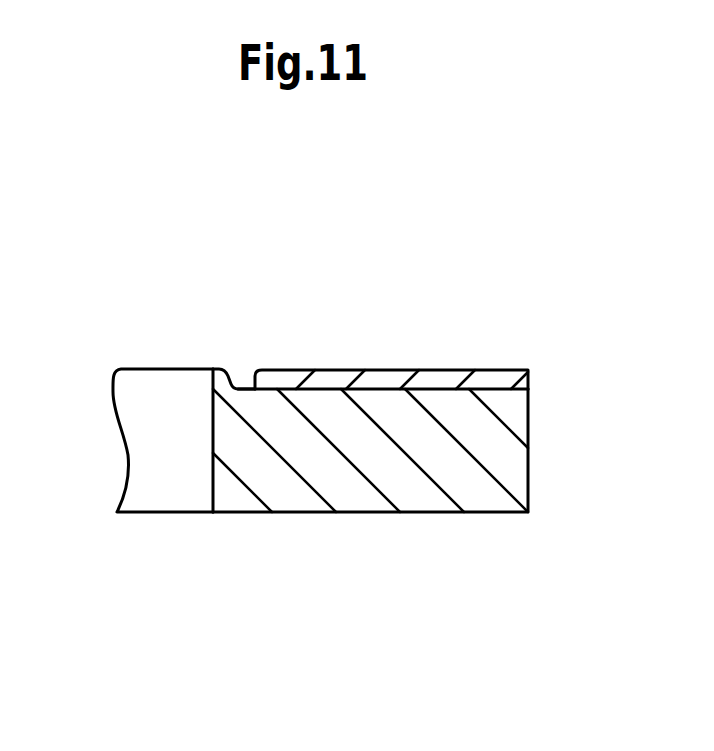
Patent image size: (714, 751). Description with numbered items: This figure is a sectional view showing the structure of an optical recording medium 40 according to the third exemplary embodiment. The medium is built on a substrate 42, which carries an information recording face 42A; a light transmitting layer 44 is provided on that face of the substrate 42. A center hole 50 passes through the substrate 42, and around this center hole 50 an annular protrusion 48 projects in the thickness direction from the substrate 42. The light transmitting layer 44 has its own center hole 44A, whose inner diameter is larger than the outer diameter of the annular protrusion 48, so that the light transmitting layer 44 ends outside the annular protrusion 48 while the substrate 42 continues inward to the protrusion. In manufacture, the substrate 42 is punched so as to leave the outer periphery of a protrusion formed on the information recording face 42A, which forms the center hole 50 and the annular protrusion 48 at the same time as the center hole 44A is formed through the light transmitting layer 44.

The optical recording medium 40 is at (437, 232).
The substrate 42 is at (528, 462).
The information recording face 42A is at (487, 389).
The light transmitting layer 44 is at (298, 370).
The center hole 44A is at (255, 388).
The annular protrusion 48 is at (220, 370).
The center hole 50 is at (213, 478).